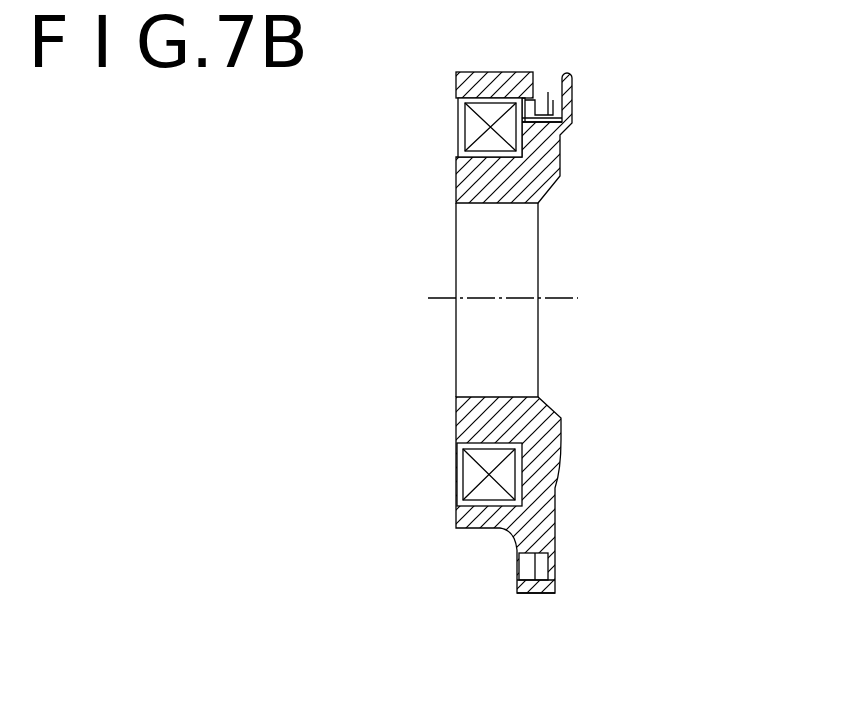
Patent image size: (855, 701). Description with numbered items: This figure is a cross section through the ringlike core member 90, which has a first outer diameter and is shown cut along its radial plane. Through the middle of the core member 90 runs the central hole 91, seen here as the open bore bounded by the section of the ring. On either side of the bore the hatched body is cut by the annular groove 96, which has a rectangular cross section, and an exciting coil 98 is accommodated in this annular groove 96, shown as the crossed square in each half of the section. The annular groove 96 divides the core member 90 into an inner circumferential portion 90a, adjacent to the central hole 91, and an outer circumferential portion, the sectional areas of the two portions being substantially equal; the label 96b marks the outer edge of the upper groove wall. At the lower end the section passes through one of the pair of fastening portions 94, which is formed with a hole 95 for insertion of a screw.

The ringlike core member 90 is at (537, 335).
The inner circumferential portion 90a is at (465, 185).
The central hole 91 is at (505, 203).
The fastening portion 94 is at (532, 595).
The hole 95 is at (547, 568).
The annular groove 96 is at (492, 502).
The upper block / bearing holder 96b is at (497, 72).
The exciting coil 98 is at (472, 128).